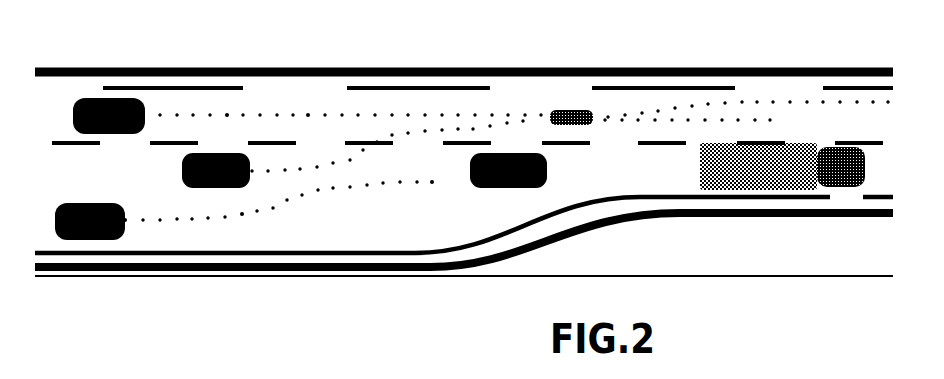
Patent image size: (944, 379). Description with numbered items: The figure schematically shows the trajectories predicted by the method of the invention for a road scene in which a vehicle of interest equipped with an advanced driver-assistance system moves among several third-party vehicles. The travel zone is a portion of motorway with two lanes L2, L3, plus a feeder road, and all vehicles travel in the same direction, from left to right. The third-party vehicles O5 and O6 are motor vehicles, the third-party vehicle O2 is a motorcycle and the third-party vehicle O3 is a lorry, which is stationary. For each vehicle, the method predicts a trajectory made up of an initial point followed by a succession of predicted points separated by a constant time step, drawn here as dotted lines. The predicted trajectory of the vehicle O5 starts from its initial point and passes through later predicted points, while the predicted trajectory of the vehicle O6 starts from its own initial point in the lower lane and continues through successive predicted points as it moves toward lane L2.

The third-party vehicle O5 is at (97, 100).
The third-party vehicle O6 is at (90, 233).
The third-party vehicle O2 is at (577, 110).
The third-party vehicle O3 is at (800, 147).
The traffic lane L3 is at (62, 130).
The traffic lane L2 is at (80, 163).